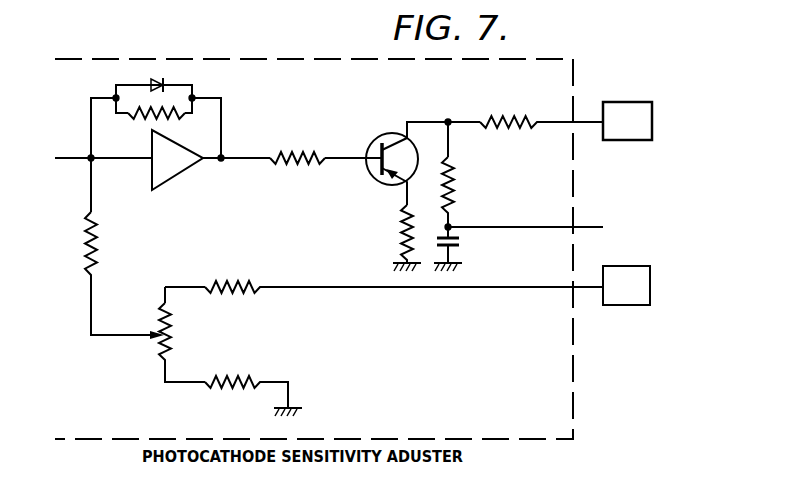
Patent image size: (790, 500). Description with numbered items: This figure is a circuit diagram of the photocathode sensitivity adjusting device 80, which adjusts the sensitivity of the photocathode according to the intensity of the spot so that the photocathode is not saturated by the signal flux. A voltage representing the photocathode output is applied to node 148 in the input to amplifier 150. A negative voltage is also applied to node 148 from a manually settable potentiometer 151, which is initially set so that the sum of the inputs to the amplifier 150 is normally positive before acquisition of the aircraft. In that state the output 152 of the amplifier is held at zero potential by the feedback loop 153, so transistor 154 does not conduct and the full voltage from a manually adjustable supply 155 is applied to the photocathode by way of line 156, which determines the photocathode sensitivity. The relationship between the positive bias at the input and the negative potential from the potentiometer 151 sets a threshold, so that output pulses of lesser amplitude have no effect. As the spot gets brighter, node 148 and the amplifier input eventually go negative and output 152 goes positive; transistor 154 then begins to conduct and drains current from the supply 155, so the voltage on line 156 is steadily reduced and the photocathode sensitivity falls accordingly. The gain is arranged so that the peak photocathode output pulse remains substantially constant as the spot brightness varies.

The adjusting device 80 is at (580, 390).
The node 148 is at (86, 151).
The amplifier 150 is at (211, 160).
The potentiometer 151 is at (151, 360).
The output 152 is at (255, 153).
The feedback loop 153 is at (204, 90).
The transistor 154 is at (368, 181).
The manually adjustable supply 155 is at (566, 121).
The line 156 is at (607, 214).